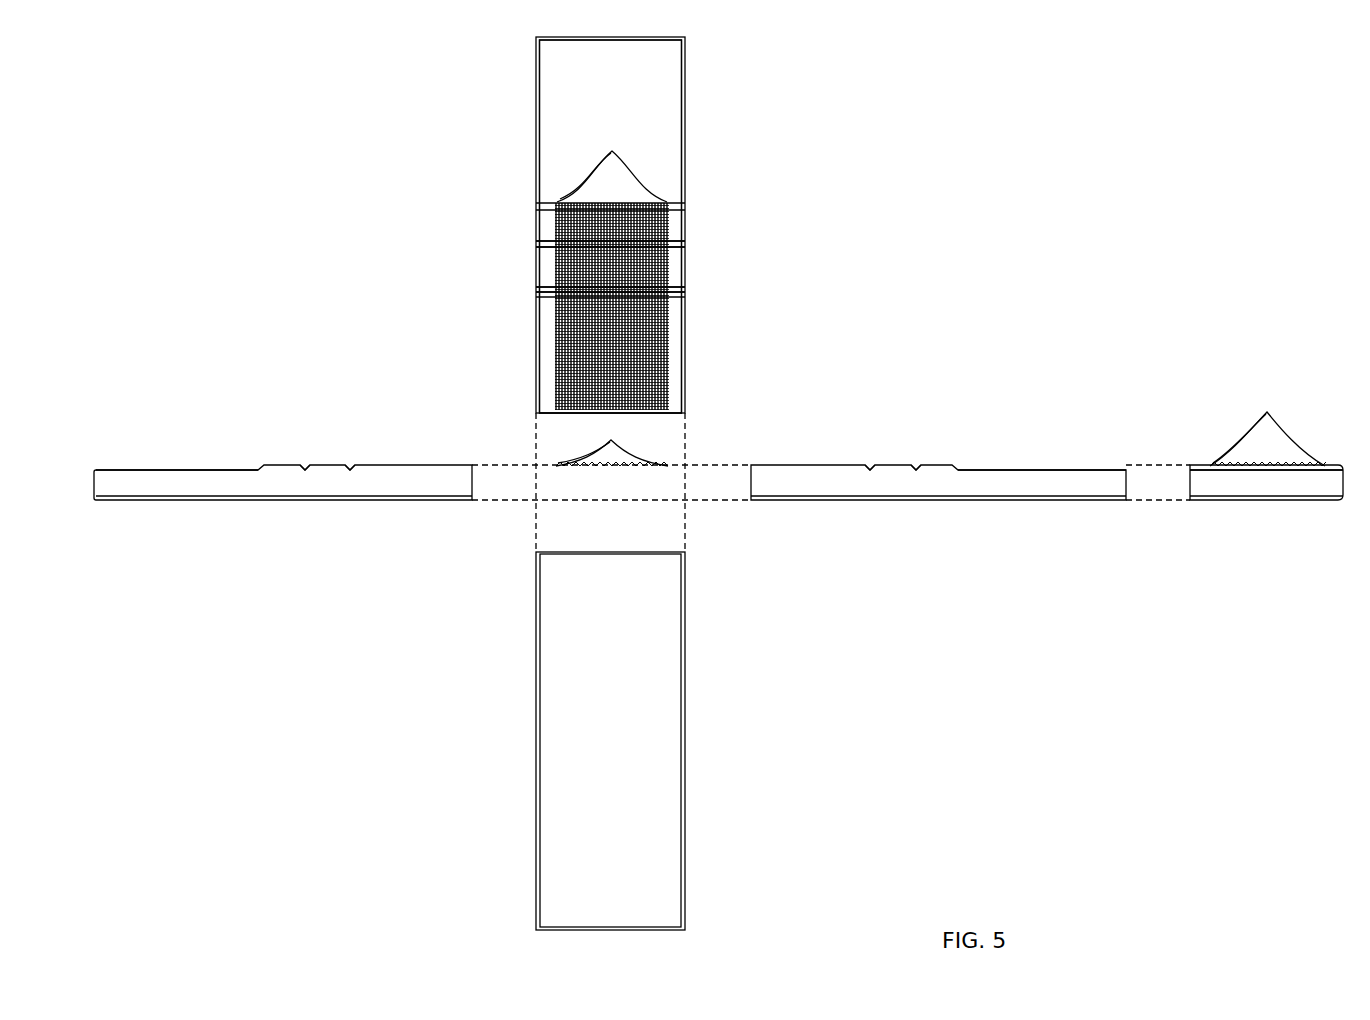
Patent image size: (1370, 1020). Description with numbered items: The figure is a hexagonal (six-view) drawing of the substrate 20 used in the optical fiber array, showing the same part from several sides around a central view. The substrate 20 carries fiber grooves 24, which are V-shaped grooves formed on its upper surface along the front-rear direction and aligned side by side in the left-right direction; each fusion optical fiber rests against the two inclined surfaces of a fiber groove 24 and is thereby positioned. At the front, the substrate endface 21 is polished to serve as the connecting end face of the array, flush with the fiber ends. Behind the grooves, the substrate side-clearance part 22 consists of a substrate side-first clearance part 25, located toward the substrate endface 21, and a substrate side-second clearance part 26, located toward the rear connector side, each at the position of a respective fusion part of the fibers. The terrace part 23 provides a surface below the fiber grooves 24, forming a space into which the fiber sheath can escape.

The substrate 20 is at (1048, 103).
The substrate endface 21 is at (473, 480).
The substrate side-clearance part 22 is at (758, 222).
The terrace part 23 is at (668, 97).
The fiber grooves 24 is at (941, 295).
The substrate side-first clearance part 25 is at (680, 290).
The substrate side-second clearance part 26 is at (683, 243).